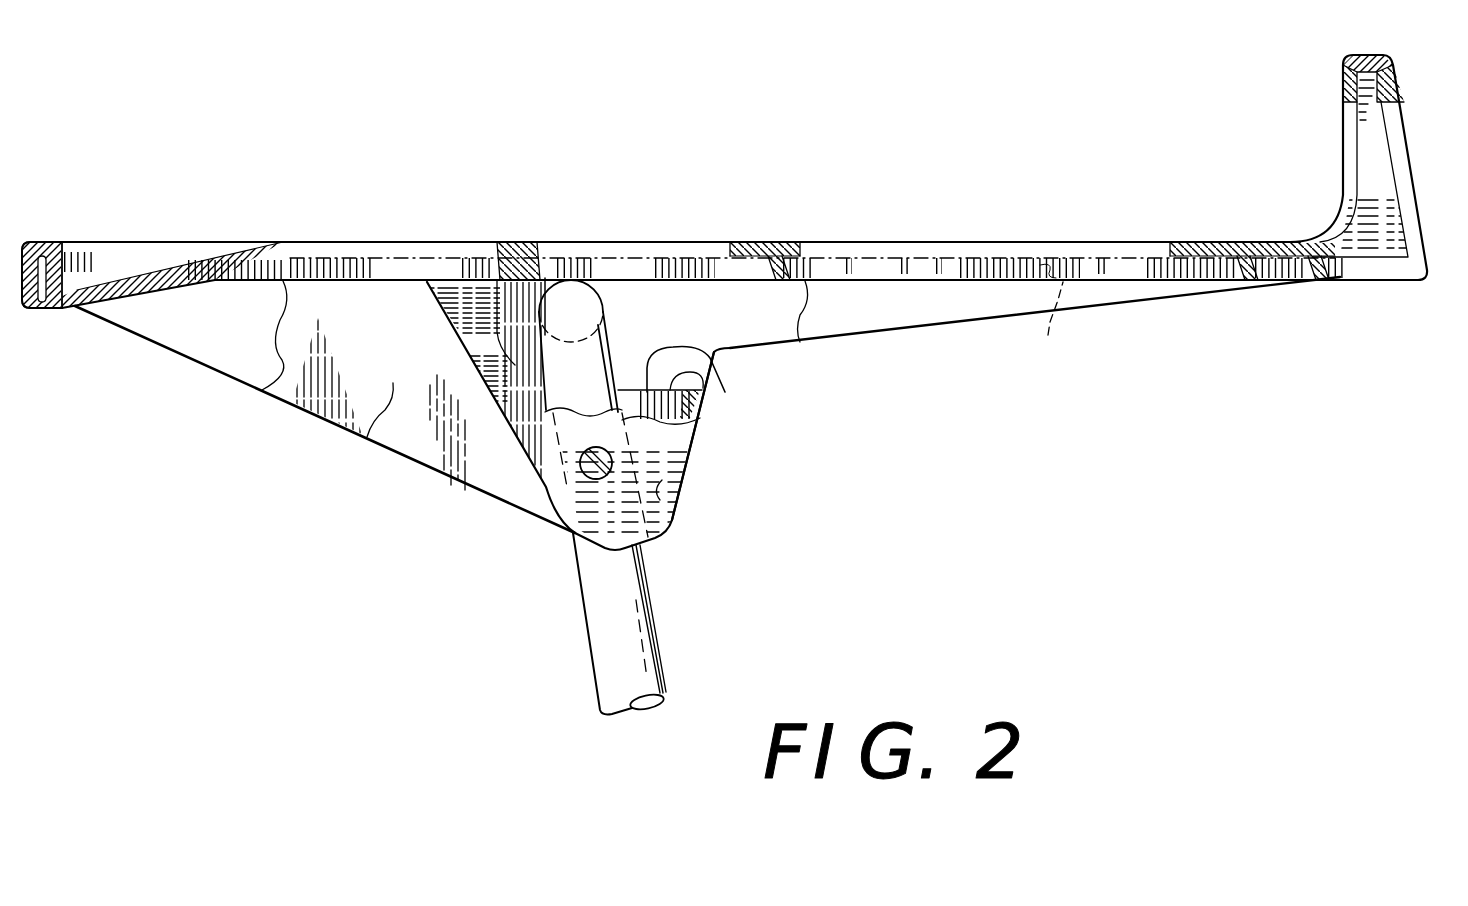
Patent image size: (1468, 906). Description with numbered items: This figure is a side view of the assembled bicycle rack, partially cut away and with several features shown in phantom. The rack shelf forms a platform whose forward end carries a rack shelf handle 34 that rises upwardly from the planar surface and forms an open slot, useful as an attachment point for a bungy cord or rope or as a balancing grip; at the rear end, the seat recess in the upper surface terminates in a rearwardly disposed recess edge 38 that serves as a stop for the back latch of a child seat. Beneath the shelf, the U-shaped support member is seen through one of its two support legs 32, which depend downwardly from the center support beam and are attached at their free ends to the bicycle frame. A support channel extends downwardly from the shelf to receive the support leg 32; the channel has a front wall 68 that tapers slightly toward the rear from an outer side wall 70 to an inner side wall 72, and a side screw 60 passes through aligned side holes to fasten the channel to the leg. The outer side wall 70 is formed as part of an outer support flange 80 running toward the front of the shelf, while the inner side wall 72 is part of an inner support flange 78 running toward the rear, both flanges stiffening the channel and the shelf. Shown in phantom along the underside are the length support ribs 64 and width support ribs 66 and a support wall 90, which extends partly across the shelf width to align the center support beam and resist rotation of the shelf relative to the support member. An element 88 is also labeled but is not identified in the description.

The support leg 32 is at (622, 602).
The rack shelf handle 34 is at (1410, 120).
The recess edge 38 is at (93, 242).
The side screw 60 is at (580, 482).
The length support ribs 64 is at (976, 242).
The width support ribs 66 is at (1048, 335).
The front wall 68 is at (714, 439).
The outer side wall 70 is at (676, 506).
The inner side wall 72 is at (718, 361).
The inner support flange 78 is at (367, 437).
The outer support flange 80 is at (838, 313).
The tab 88 is at (713, 393).
The support wall 90 is at (545, 335).